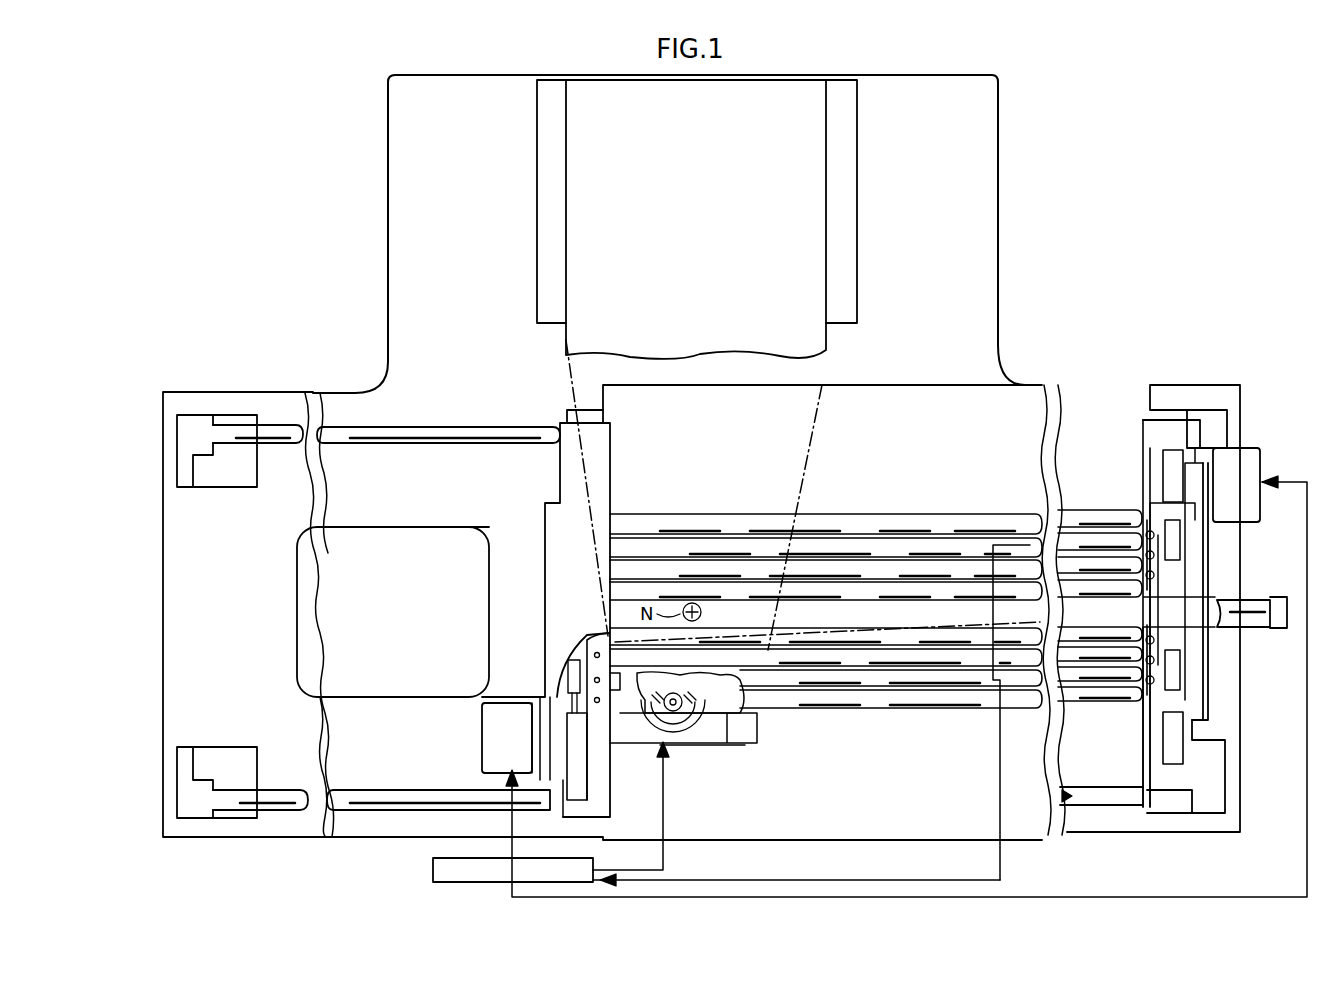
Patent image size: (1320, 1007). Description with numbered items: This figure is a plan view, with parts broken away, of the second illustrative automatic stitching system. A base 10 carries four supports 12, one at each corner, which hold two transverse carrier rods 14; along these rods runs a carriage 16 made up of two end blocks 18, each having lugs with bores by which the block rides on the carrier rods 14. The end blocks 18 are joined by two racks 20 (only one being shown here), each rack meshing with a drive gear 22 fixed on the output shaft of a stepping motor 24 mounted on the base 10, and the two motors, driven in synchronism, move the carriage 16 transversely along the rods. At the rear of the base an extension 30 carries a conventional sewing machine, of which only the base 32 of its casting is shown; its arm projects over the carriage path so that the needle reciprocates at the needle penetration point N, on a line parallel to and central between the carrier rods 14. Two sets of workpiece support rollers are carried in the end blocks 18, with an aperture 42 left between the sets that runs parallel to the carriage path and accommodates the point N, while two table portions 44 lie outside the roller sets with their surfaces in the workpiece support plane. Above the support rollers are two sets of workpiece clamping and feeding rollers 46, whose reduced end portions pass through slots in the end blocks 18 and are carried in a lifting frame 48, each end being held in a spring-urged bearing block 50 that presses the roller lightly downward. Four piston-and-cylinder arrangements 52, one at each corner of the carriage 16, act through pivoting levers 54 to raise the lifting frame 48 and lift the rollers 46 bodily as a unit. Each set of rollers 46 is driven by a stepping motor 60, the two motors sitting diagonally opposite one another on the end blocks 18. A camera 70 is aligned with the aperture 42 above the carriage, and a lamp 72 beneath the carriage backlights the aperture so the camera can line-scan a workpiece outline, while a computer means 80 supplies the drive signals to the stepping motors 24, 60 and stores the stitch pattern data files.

The base 10 is at (328, 538).
The supports 12 is at (228, 483).
The transverse carrier rods 14 is at (430, 432).
The carriage 16 is at (1036, 342).
The end blocks 18 is at (574, 410).
The racks 20 is at (720, 700).
The drive gear 22 is at (690, 706).
The stepping motor 24 is at (683, 735).
The extension 30 is at (494, 153).
The sewing machine base 32 is at (704, 208).
The aperture 42 is at (914, 610).
The table portions 44 is at (922, 458).
The workpiece clamping and feeding rollers 46 is at (862, 590).
The lifting frame 48 is at (1180, 606).
The bearing block 50 is at (1146, 575).
The piston-and-cylinder arrangements 52 is at (575, 760).
The pivoting lever 54 is at (1185, 553).
The stepping motor 60 is at (509, 748).
The camera 70 is at (1010, 615).
The lamp 72 is at (1270, 620).
The computer means 80 is at (433, 870).